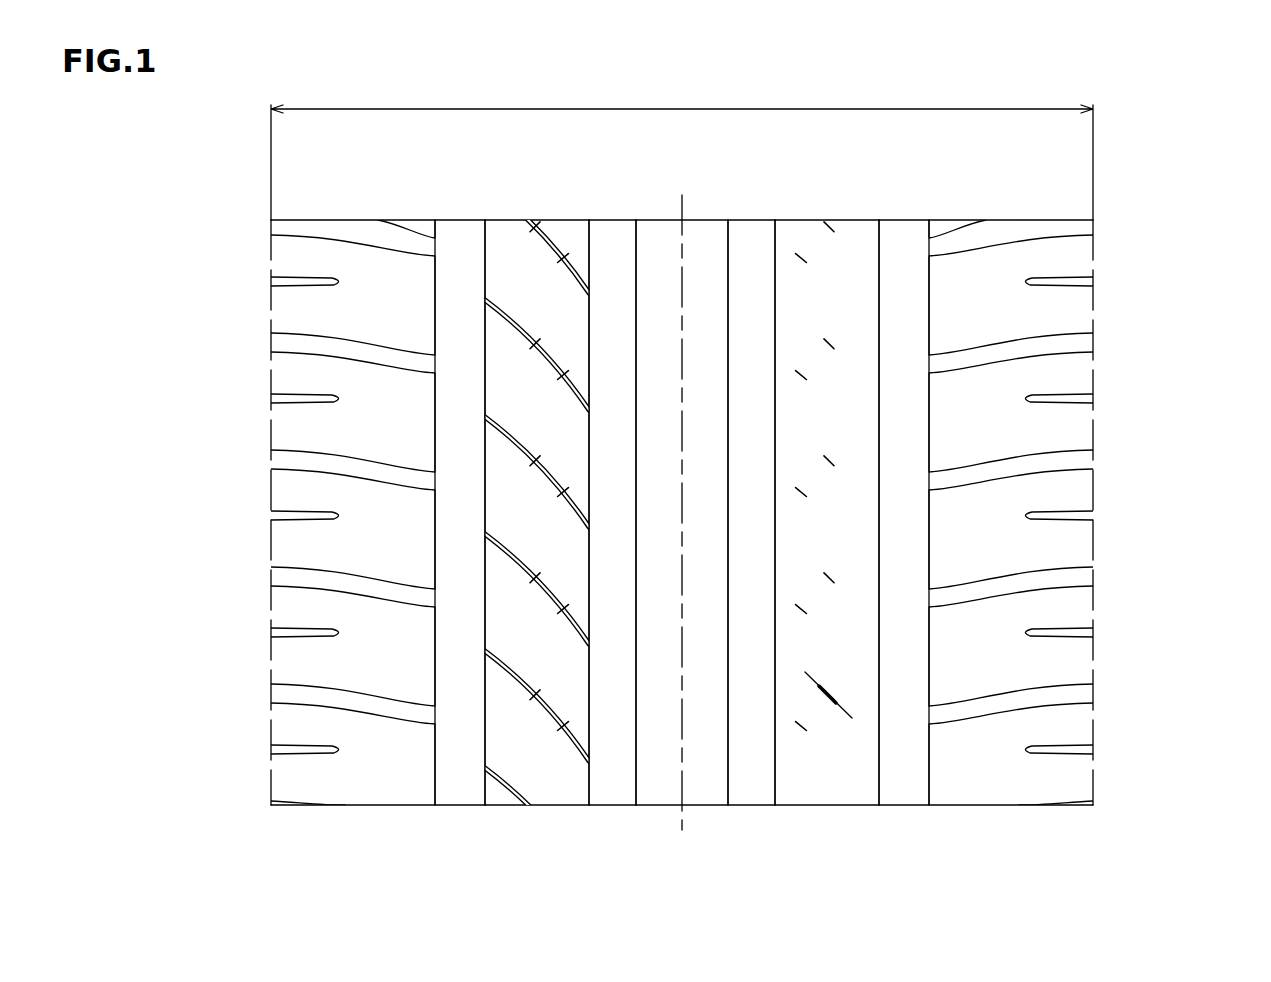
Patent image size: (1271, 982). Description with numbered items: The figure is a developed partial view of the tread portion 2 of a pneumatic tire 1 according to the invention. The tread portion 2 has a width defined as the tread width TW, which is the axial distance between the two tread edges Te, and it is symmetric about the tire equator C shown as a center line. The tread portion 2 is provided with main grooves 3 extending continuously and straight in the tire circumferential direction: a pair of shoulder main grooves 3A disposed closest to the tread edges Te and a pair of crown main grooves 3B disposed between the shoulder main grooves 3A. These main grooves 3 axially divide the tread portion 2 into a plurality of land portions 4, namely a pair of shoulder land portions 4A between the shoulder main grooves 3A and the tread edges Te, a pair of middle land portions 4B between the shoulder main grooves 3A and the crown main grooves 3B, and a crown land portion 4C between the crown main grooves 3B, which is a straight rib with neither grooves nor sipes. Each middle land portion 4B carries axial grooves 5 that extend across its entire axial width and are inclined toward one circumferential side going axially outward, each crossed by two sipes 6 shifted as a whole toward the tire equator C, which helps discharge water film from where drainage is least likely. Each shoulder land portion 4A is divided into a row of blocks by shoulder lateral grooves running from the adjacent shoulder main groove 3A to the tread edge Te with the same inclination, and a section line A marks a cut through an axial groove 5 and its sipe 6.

The tire 1 is at (1208, 147).
The tread portion 2 is at (1131, 174).
The main groove 3 is at (754, 261).
The shoulder main groove 3A is at (459, 263).
The crown main groove 3B is at (611, 254).
The land portion 4 is at (682, 549).
The shoulder land portion 4A is at (363, 761).
The middle land portion 4B is at (495, 725).
The crown land portion 4C is at (650, 767).
The axial groove 5 is at (533, 717).
The sipe 6 is at (561, 747).
The tread width TW is at (682, 149).
The tire equator C is at (682, 499).
The tread edge Te is at (271, 258).
The section line A- A is at (863, 700).